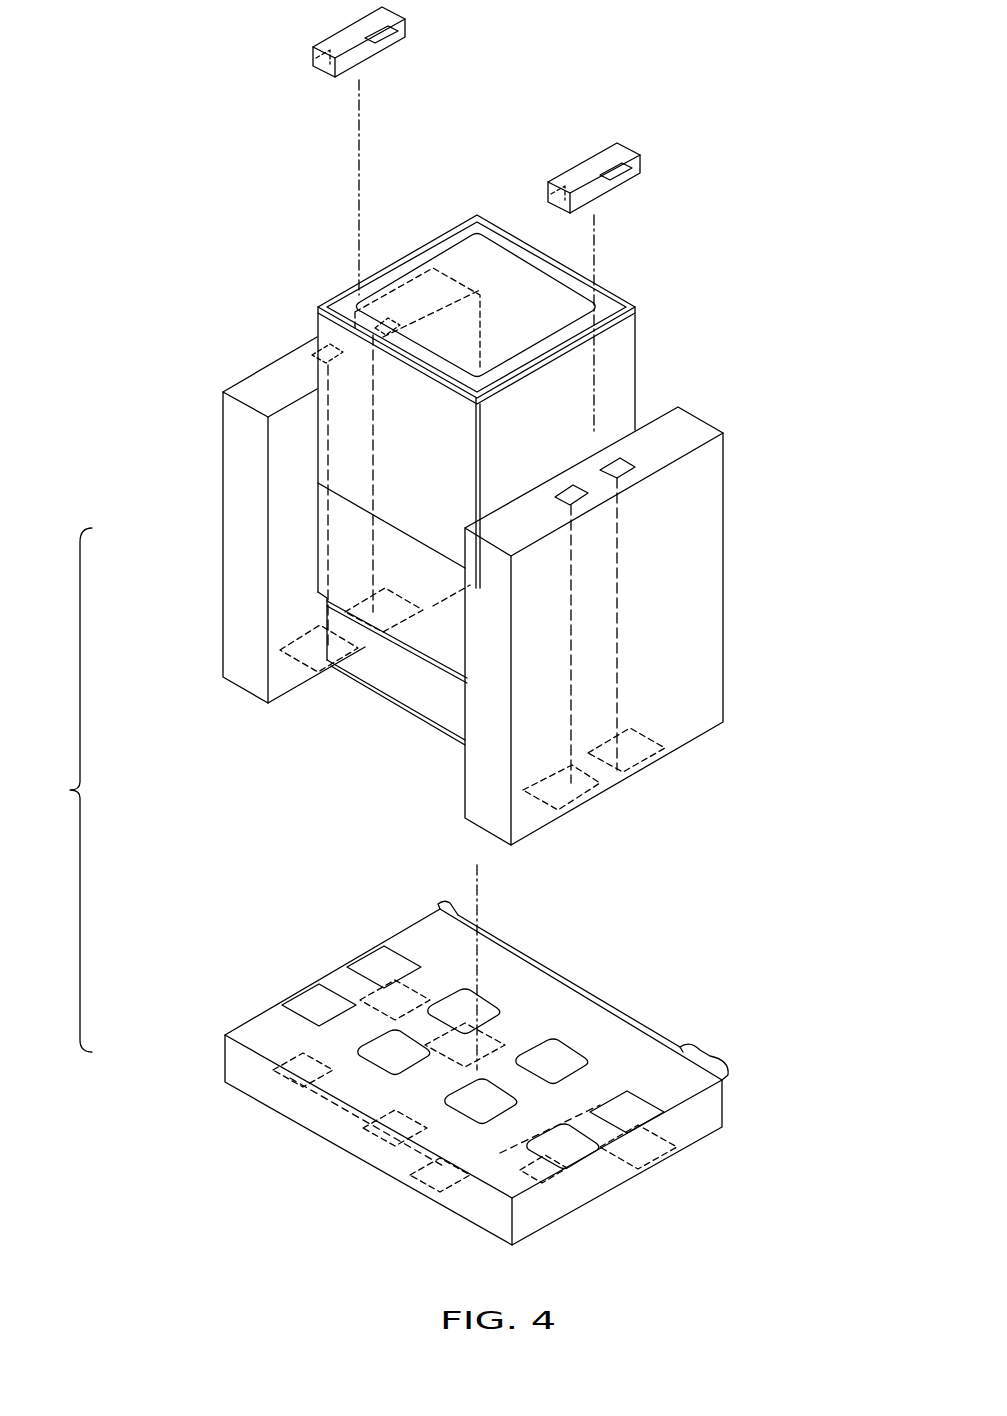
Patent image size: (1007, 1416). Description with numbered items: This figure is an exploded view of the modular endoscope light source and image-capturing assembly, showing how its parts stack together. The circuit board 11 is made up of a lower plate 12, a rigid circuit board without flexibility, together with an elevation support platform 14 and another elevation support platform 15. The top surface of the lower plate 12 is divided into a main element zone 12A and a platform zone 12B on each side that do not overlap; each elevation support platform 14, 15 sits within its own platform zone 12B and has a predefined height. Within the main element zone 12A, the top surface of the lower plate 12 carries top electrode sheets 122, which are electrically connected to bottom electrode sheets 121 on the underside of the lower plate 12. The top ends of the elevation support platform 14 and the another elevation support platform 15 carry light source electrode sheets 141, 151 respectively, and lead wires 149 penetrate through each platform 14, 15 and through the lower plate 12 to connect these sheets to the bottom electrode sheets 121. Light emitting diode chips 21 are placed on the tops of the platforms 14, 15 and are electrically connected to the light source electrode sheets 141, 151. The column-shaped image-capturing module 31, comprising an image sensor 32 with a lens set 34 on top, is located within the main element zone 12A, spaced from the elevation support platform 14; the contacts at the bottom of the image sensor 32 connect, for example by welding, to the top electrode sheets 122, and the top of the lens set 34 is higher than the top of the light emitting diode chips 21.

The circuit board 11 is at (67, 790).
The lower plate 12 is at (225, 1057).
The main element zone 12A is at (587, 980).
The platform zone 12B is at (467, 908).
The bottom electrode sheets 121 is at (433, 1175).
The top electrode sheets 122 is at (433, 1106).
The elevation support platform 14 is at (223, 527).
The light source electrode sheets 141 is at (325, 357).
The lead wires 149 is at (323, 427).
The another elevation support platform 15 is at (723, 597).
The light source electrode sheets 151 is at (623, 473).
The light emitting diode chips 21 is at (343, 32).
The image-capturing module 31 is at (494, 218).
The image sensor 32 is at (393, 668).
The lens set 34 is at (475, 263).